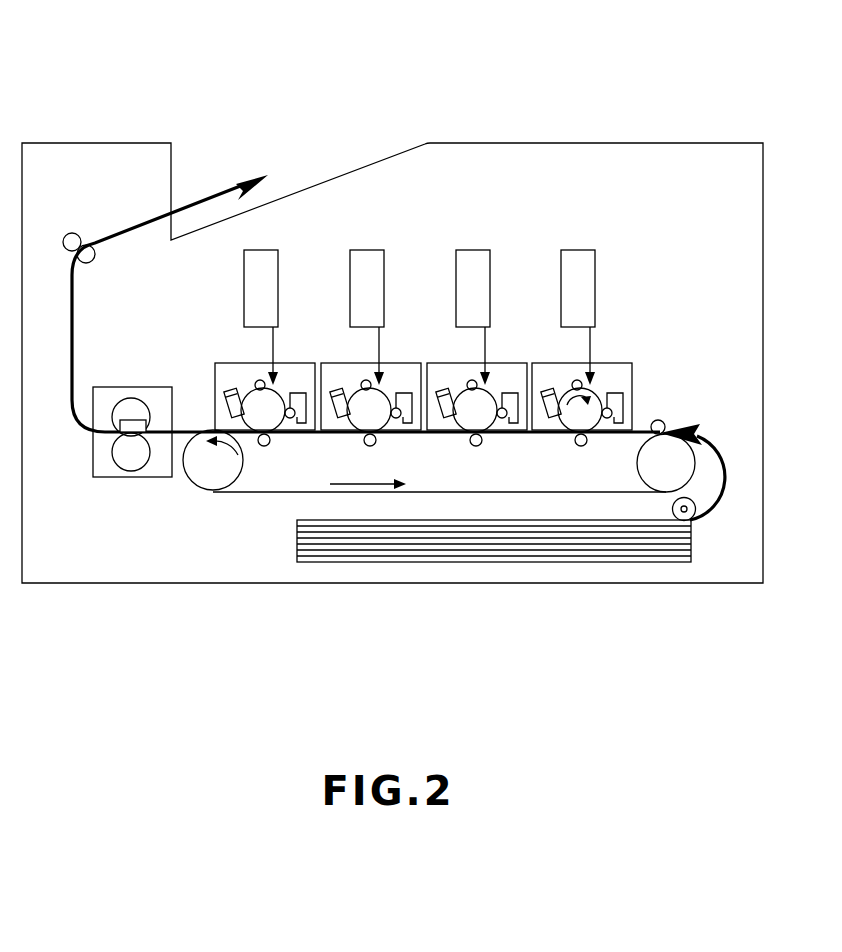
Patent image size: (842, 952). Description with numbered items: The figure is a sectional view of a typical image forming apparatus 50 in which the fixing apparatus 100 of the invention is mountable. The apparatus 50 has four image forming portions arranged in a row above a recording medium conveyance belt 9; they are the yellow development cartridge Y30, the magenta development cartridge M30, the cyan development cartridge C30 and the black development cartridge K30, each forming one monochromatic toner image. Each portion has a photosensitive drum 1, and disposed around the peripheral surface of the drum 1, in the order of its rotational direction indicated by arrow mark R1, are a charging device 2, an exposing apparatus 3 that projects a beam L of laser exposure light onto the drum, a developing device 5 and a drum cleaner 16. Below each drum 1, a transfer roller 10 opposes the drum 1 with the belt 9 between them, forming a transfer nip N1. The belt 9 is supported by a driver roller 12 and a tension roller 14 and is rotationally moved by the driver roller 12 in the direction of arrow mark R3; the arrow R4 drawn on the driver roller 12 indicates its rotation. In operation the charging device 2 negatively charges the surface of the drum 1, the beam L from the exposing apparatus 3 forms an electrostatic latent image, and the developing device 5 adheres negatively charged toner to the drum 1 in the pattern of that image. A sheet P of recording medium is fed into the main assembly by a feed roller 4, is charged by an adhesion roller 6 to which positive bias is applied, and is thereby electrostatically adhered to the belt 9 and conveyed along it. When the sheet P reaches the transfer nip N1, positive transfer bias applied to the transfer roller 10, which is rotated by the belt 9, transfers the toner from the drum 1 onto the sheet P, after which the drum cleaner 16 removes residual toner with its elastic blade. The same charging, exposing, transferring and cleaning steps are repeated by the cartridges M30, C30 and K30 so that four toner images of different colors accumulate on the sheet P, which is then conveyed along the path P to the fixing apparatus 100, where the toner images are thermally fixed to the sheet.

The image forming apparatus 50 is at (104, 132).
The fixing apparatus 100 is at (132, 420).
The black development cartridge K30 is at (295, 356).
The cyan development cartridge C30 is at (399, 356).
The magenta development cartridge M30 is at (503, 356).
The yellow development cartridge Y30 is at (577, 348).
The exposing apparatus 3 is at (578, 288).
The charging device 2 is at (574, 382).
The developing device 5 is at (615, 393).
The adhesion roller 6 is at (660, 420).
The drum cleaner 16 is at (548, 416).
The photosensitive drum 1 is at (570, 433).
The transfer roller 10 is at (582, 447).
The driver roller 12 is at (213, 534).
The recording medium conveyance belt 9 is at (505, 494).
The tension roller 14 is at (660, 474).
The feed roller 4 is at (680, 521).
The transfer nip N1 is at (586, 434).
The rotational direction of photosensitive drum R1 is at (579, 408).
The belt moving direction R3 is at (368, 474).
The roller rotation direction R4 is at (219, 454).
The beam of exposure light L is at (585, 356).
The sheet of recording medium P is at (404, 340).